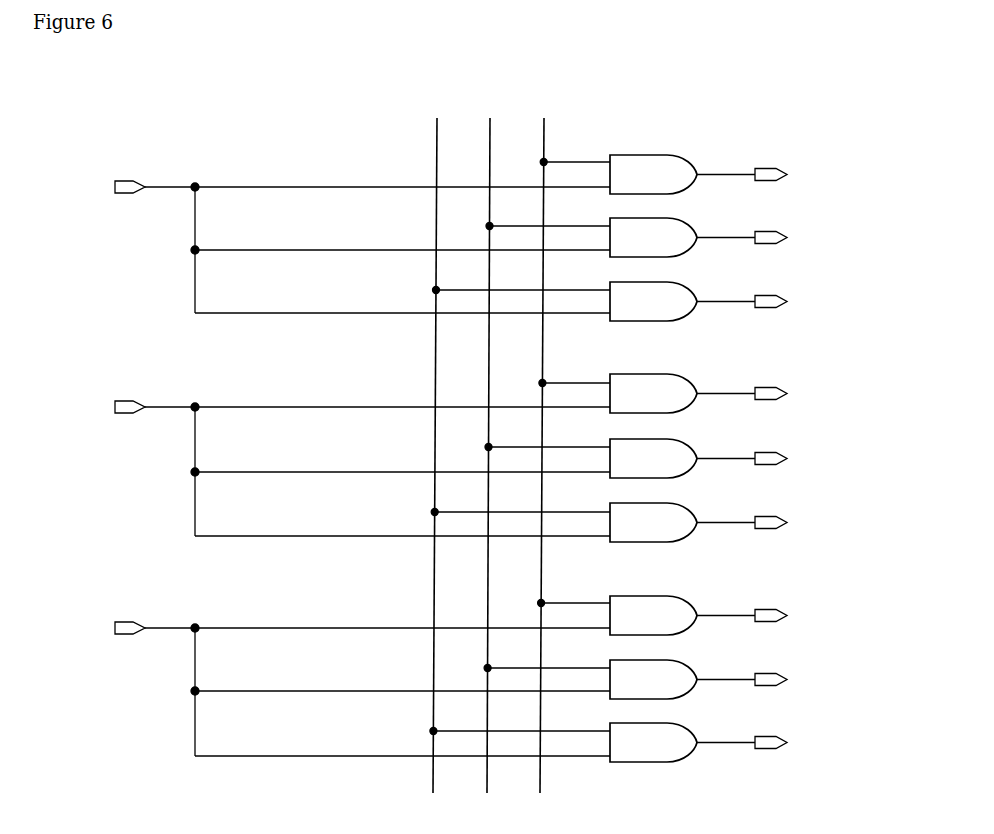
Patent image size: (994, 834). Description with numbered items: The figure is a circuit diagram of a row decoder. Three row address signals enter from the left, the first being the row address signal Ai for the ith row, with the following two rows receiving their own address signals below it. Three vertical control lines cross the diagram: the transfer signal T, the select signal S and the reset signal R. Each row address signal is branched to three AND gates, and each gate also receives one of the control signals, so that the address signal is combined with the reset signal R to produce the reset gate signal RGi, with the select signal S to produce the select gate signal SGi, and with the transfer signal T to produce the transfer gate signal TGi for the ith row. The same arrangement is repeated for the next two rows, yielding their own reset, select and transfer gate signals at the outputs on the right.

The transfer signal T is at (436, 441).
The select signal S is at (490, 441).
The reset signal R is at (543, 441).
The row address signal Ai is at (128, 244).
The reset gate signal RGi is at (521, 174).
The select gate signal SGi is at (521, 237).
The transfer gate signal TGi is at (521, 301).